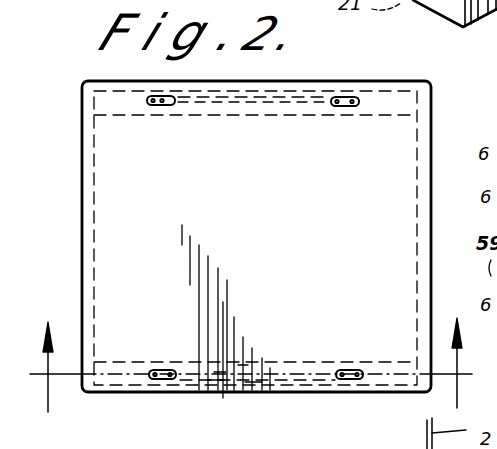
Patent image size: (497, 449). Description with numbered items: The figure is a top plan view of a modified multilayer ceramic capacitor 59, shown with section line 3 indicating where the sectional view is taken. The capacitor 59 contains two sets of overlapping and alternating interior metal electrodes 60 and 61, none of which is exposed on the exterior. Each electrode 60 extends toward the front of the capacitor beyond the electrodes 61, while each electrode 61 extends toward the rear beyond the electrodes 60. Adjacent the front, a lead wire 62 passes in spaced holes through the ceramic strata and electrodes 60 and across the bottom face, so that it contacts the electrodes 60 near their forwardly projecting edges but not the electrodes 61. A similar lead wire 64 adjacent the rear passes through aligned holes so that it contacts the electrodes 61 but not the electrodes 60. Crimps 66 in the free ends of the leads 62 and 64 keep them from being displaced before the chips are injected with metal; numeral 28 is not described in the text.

The section line 3- 3 is at (256, 383).
The post 28 is at (416, 447).
The multilayer ceramic capacitor 59 is at (442, 110).
The interior metal electrodes 60 is at (398, 110).
The interior metal electrodes 61 is at (284, 88).
The lead wire 62 is at (340, 373).
The lead wire 64 is at (175, 101).
The crimps 66 is at (162, 106).